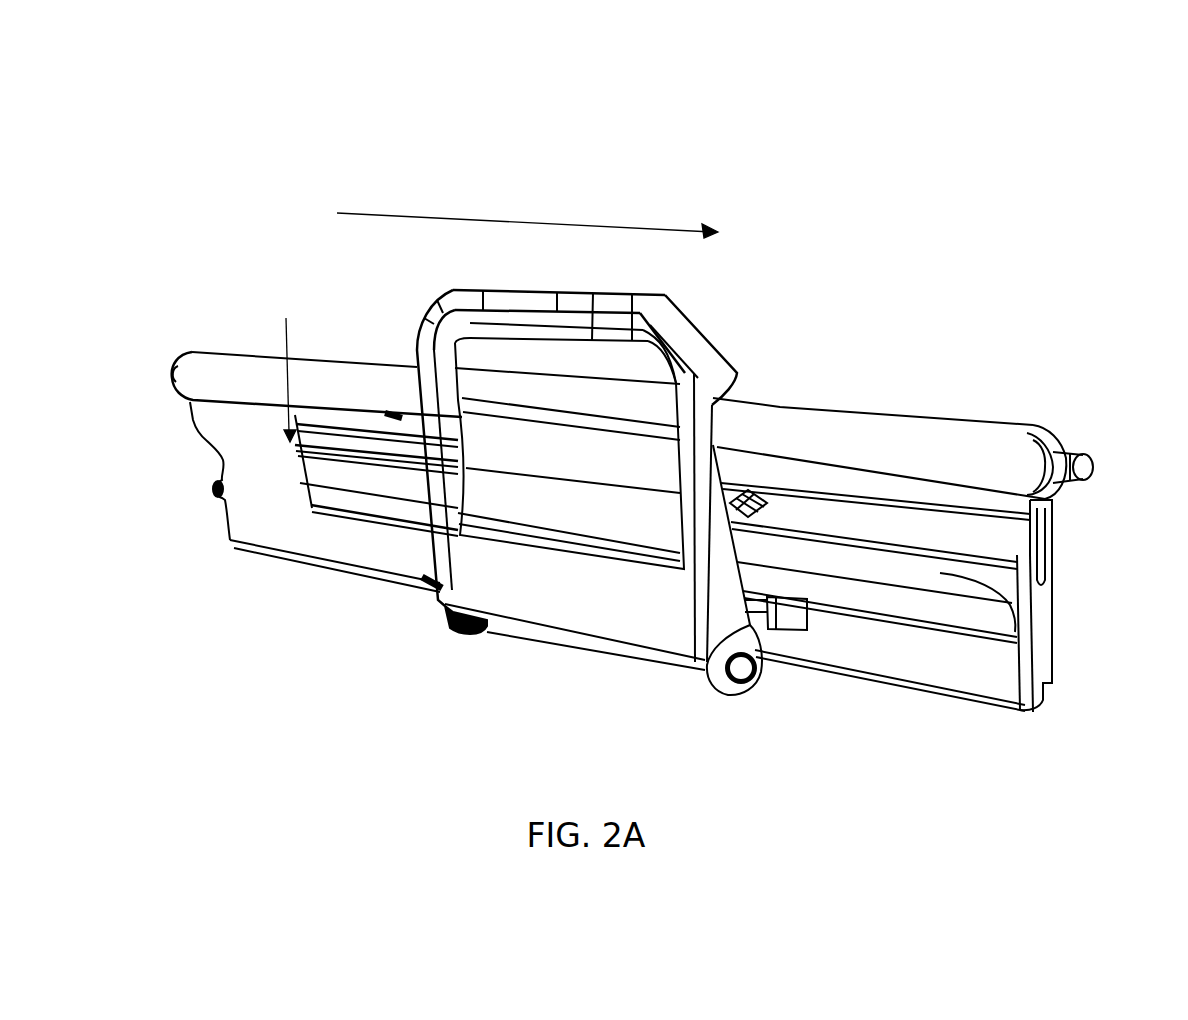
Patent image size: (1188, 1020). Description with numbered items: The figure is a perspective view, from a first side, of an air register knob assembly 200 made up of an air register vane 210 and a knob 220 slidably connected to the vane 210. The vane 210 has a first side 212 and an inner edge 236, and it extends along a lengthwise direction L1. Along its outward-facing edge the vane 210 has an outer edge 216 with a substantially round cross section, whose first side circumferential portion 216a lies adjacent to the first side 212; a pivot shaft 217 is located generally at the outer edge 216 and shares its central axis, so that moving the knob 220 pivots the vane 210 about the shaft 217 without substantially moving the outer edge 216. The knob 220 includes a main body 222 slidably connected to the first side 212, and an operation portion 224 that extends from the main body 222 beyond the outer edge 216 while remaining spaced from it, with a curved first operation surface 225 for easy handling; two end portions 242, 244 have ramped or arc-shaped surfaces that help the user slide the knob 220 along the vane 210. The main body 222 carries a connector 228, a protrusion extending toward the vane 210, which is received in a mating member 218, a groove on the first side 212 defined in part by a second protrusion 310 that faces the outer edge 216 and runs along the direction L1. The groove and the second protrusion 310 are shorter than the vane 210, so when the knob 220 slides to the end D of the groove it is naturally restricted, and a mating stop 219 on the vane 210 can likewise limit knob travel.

The air register knob assembly 200 is at (800, 170).
The air register vane 210 is at (208, 340).
The first side 212 is at (957, 655).
The outer edge 216 is at (936, 413).
The first side circumferential portion 216a is at (963, 455).
The pivot shaft 217 is at (1073, 455).
The mating member 218 is at (1050, 573).
The mating stop 219 is at (707, 678).
The knob 220 is at (672, 298).
The main body 222 is at (716, 430).
The operation portion 224 is at (723, 350).
The first operation surface 225 is at (527, 359).
The connector 228 is at (768, 502).
The inner edge 236 is at (373, 575).
The end portion 242 is at (424, 325).
The end portion 244 is at (682, 333).
The second protrusion 310 is at (1040, 648).
The end of the groove D is at (285, 363).
The lengthwise direction L1 is at (527, 216).